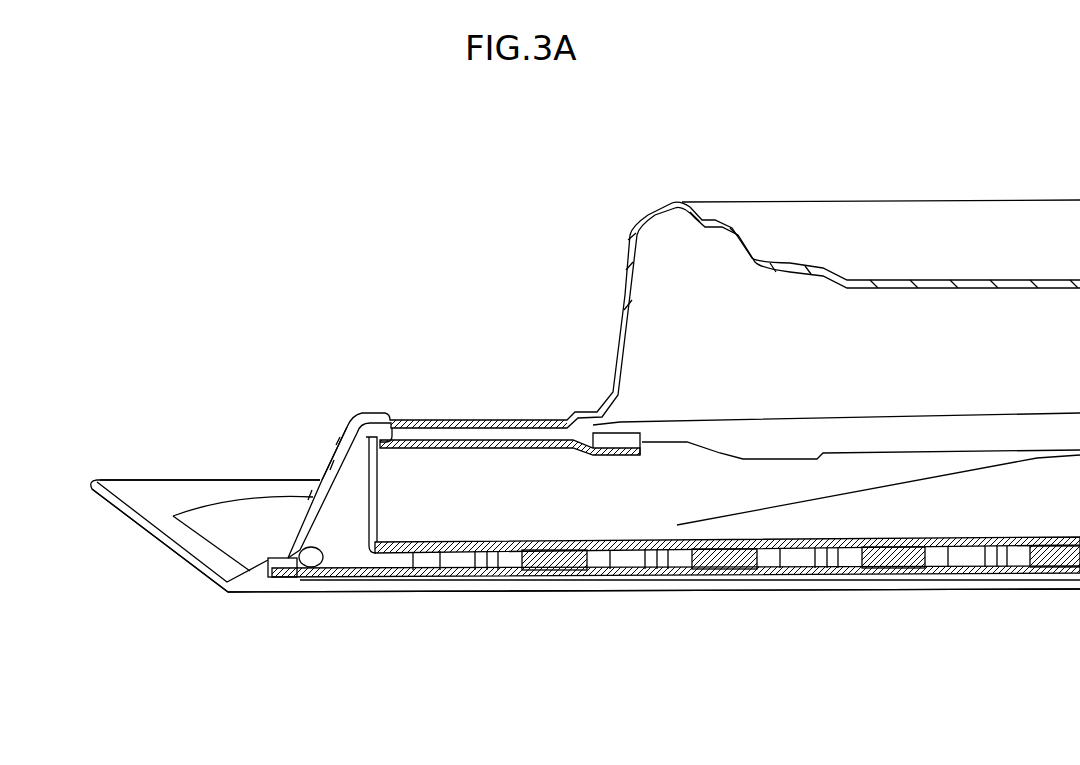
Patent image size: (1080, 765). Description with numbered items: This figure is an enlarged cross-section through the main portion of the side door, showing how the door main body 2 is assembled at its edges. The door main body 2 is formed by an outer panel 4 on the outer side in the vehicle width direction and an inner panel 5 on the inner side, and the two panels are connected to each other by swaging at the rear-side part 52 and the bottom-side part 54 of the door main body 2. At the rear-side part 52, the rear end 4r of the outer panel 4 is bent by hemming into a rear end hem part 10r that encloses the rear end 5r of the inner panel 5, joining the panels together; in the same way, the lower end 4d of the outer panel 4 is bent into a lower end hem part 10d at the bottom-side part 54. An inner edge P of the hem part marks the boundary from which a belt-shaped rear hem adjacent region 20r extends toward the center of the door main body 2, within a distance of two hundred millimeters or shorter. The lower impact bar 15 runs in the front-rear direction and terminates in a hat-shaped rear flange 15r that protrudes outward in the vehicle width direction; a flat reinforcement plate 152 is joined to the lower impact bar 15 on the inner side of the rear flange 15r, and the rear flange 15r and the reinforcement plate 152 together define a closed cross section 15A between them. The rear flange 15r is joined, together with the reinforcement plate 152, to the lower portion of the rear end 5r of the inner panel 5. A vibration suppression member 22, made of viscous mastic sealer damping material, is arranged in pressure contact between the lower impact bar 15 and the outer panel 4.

The door main body 2 is at (119, 380).
The outer panel 4 is at (180, 559).
The lower end of outer panel 4d is at (258, 478).
The rear end of outer panel 4r is at (205, 577).
The rear-side part 52 is at (140, 532).
The bottom-side part 54 is at (299, 475).
The lower end hem part 10d is at (212, 488).
The rear end hem part 10r is at (288, 556).
The inner panel 5 is at (623, 250).
The rear end of inner panel 5r is at (287, 580).
The inner edge P is at (318, 565).
The closed cross section 15A is at (462, 506).
The reinforcement plate 152 is at (507, 449).
The lower impact bar 15 is at (1024, 550).
The rear flange 15r is at (412, 556).
The vibration suppression member 22 is at (460, 578).
The rear hem adjacent region 20r is at (930, 606).